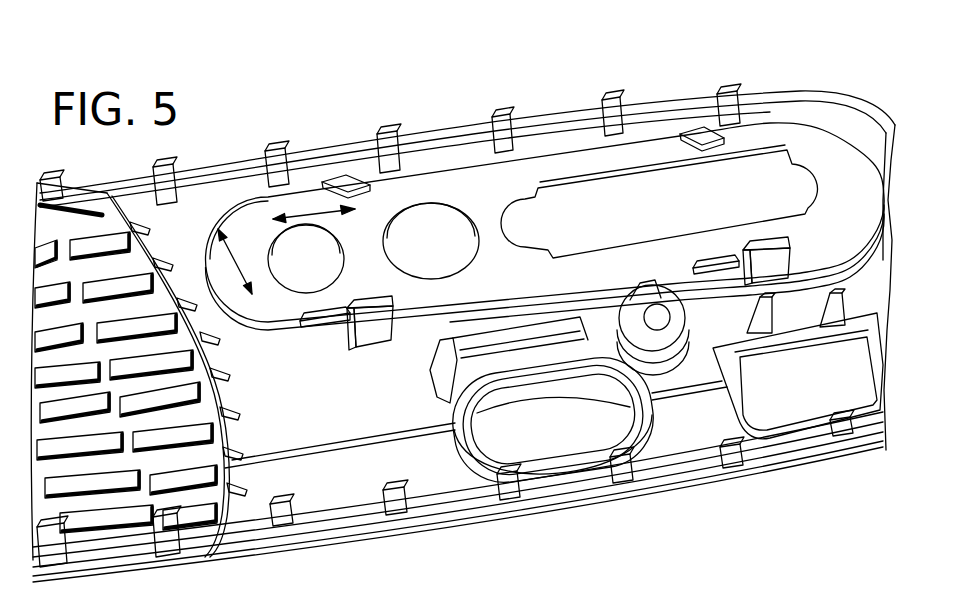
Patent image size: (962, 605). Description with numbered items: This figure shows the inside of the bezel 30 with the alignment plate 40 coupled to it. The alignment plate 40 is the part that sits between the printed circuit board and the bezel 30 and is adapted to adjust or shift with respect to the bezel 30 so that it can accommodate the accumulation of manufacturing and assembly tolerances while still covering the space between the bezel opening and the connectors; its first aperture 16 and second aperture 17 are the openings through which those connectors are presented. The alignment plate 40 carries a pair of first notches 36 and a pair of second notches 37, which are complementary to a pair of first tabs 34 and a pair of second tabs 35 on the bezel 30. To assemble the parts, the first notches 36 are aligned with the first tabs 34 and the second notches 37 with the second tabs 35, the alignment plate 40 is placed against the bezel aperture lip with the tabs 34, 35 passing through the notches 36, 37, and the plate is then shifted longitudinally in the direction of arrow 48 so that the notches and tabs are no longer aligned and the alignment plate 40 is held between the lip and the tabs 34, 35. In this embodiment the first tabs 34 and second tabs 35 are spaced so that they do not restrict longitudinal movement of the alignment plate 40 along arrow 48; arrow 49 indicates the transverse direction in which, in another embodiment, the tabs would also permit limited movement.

The bezel 30 is at (743, 474).
The alignment plate 40 is at (820, 147).
The first aperture 16 is at (584, 190).
The second aperture 17 is at (421, 204).
The first tabs 34 is at (340, 182).
The second tabs 35 is at (764, 247).
The first notches 36 is at (293, 197).
The second notches 37 is at (300, 316).
The arrow 48 is at (330, 212).
The arrow 49 is at (212, 231).